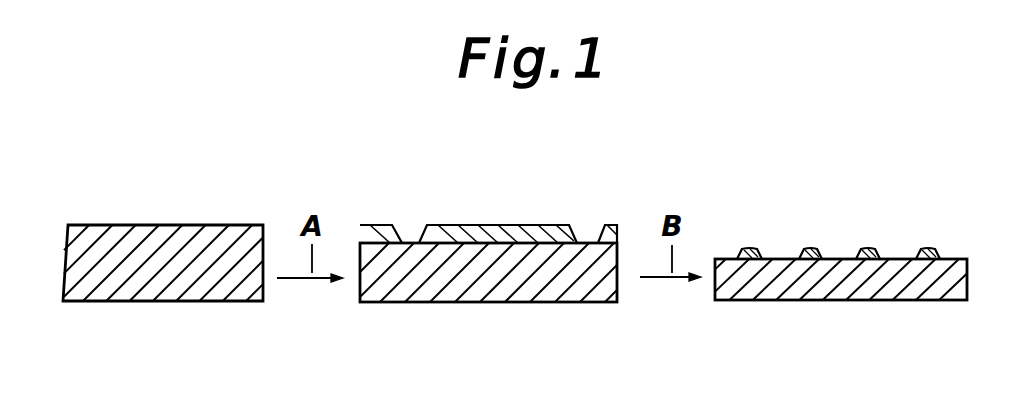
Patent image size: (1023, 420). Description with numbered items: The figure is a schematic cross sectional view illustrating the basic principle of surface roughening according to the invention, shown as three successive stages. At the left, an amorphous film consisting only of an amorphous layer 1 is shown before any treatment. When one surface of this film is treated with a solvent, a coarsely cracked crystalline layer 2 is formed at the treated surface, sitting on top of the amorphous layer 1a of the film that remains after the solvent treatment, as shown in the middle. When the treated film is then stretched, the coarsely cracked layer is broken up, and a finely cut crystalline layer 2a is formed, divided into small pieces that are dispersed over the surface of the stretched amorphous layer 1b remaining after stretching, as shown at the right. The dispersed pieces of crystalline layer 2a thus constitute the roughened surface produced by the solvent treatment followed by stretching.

The amorphous layer 1 is at (183, 302).
The amorphous layer after solvent treatment 1a is at (473, 302).
The coarsely cracked crystallized layer 2 is at (440, 233).
The amorphous layer remaining after stretching 1b is at (818, 300).
The finely cut crystallized layer 2a is at (754, 248).